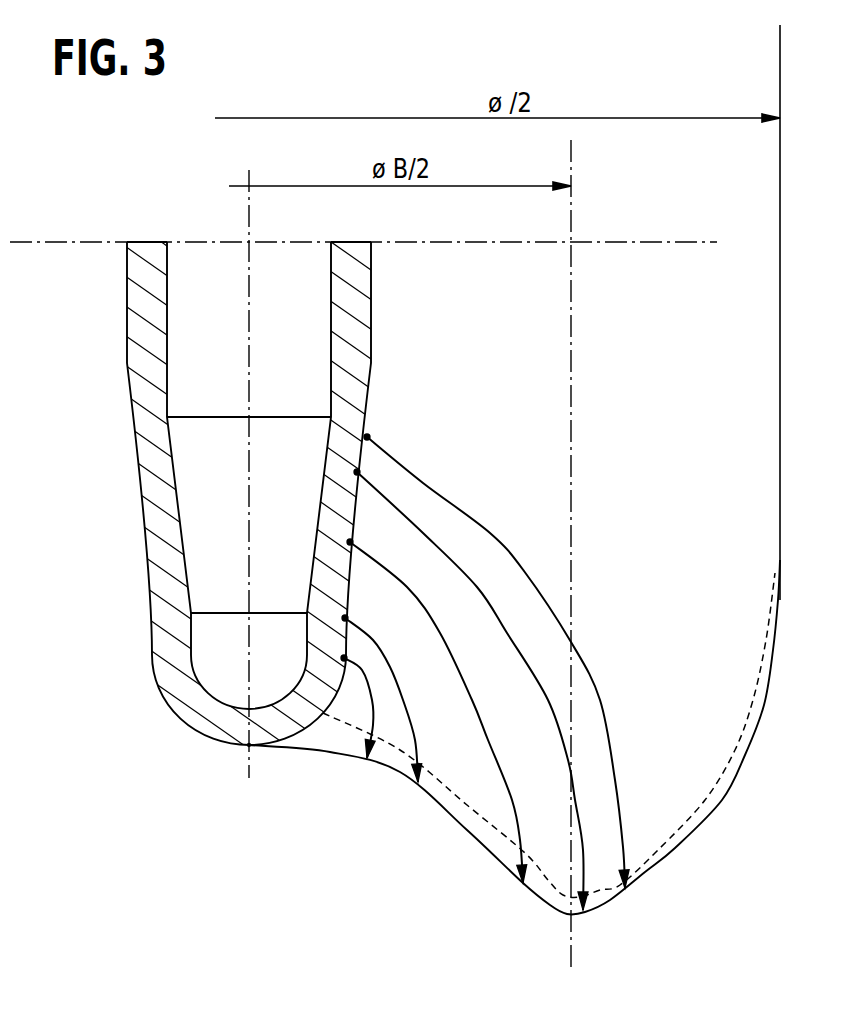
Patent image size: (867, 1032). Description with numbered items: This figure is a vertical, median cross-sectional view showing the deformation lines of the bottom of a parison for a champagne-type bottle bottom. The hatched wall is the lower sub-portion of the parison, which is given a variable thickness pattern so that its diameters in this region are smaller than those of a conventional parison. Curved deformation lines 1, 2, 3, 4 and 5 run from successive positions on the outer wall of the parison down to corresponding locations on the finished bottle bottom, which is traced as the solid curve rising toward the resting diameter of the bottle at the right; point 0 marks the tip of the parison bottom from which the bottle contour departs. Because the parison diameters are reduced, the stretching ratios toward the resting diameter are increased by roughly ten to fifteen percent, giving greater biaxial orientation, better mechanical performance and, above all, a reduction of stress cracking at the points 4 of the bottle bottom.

The point 0 (nozzle tip reference point) 0 is at (249, 745).
The flow trajectory line 1 is at (358, 716).
The flow trajectory line 2 is at (382, 707).
The flow trajectory line 3 is at (437, 718).
The points 4 is at (477, 694).
The flow trajectory line 5 is at (500, 664).